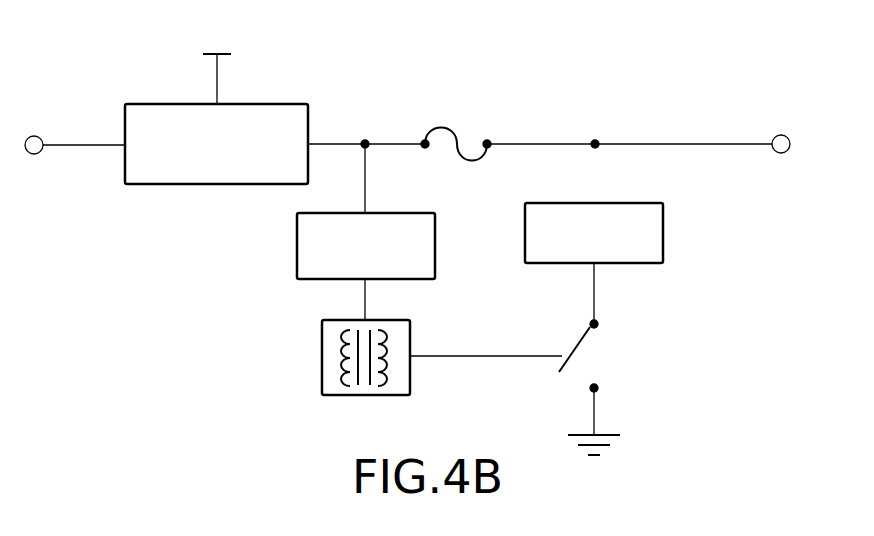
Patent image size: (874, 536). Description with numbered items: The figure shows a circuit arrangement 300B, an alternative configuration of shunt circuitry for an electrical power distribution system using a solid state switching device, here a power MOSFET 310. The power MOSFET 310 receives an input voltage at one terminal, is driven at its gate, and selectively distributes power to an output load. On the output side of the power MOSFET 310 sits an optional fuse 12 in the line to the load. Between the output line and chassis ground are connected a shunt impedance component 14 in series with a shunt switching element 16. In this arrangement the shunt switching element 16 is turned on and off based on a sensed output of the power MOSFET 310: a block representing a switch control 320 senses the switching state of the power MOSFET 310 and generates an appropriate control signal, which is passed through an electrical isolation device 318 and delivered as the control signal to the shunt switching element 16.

The circuit arrangement 300B is at (118, 45).
The fuse 12 is at (463, 137).
The shunt impedance component 14 is at (663, 230).
The shunt switching element 16 is at (597, 352).
The power MOSFET 310 is at (157, 184).
The electrical isolation device 318 is at (322, 345).
The switch control 320 is at (297, 250).